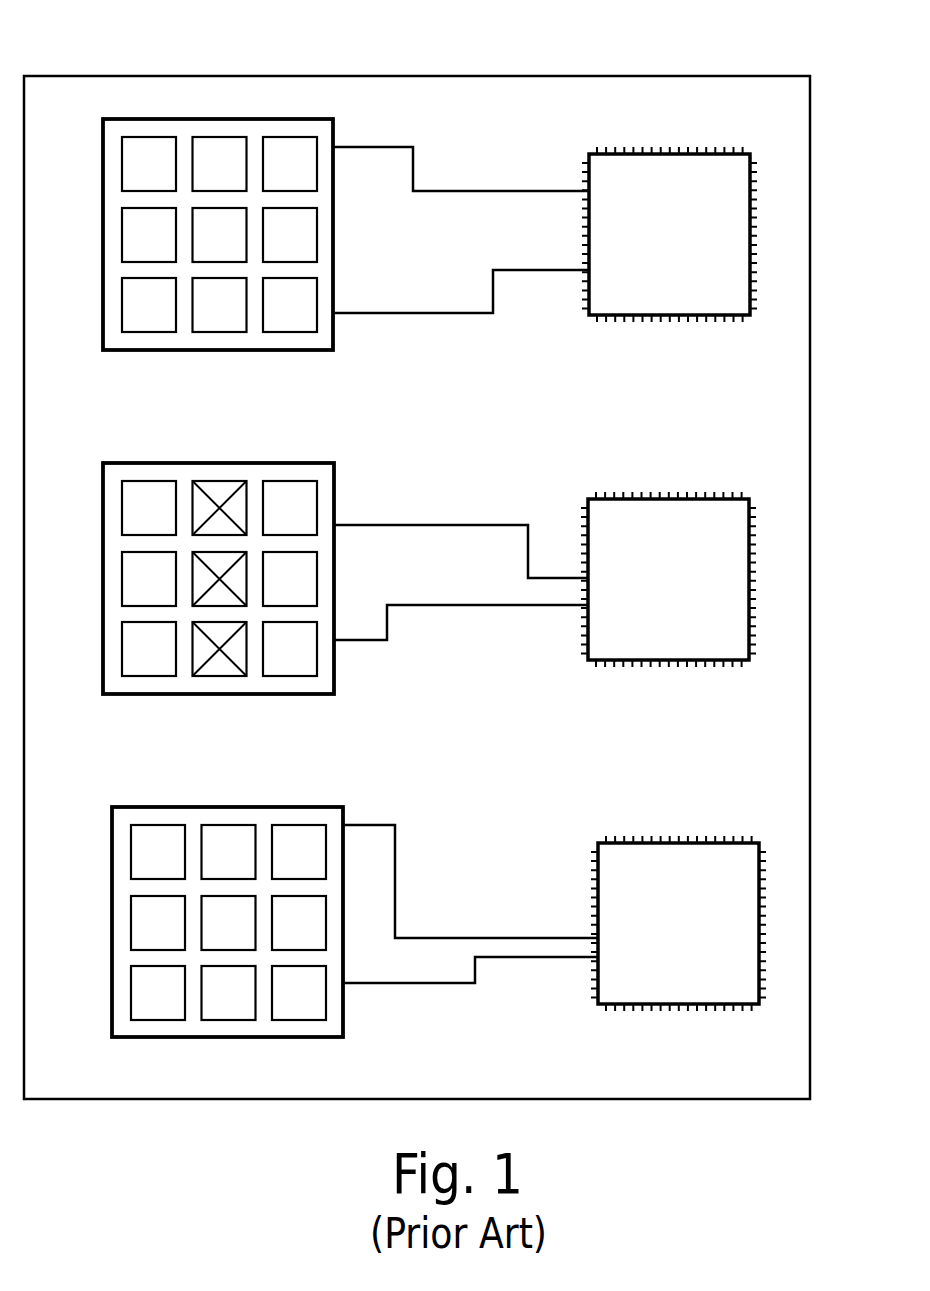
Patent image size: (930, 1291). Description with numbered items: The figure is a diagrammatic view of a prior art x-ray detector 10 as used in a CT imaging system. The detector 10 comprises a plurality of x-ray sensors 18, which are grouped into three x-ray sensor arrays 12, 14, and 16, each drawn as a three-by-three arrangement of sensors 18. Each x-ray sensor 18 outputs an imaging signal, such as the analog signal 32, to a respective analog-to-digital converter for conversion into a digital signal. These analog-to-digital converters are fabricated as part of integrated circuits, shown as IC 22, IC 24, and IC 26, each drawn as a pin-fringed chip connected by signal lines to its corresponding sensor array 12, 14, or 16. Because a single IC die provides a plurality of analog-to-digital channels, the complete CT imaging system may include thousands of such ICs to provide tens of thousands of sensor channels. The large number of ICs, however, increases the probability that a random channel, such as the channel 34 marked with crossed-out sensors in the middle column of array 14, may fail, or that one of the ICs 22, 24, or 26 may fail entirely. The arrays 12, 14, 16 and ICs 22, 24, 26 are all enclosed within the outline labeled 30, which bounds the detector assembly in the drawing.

The x-ray detector 10 is at (194, 40).
The x-ray sensor array 12 is at (335, 347).
The x-ray sensor array 14 is at (293, 694).
The x-ray sensor array 16 is at (196, 805).
The x-ray sensor 18 is at (140, 313).
The integrated circuit 22 is at (588, 317).
The integrated circuit 24 is at (652, 490).
The integrated circuit 26 is at (658, 1008).
The substrate / board 30 is at (208, 1099).
The analog signal 32 is at (448, 191).
The channel 34 is at (222, 465).